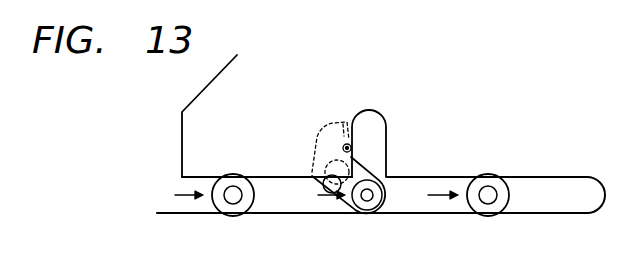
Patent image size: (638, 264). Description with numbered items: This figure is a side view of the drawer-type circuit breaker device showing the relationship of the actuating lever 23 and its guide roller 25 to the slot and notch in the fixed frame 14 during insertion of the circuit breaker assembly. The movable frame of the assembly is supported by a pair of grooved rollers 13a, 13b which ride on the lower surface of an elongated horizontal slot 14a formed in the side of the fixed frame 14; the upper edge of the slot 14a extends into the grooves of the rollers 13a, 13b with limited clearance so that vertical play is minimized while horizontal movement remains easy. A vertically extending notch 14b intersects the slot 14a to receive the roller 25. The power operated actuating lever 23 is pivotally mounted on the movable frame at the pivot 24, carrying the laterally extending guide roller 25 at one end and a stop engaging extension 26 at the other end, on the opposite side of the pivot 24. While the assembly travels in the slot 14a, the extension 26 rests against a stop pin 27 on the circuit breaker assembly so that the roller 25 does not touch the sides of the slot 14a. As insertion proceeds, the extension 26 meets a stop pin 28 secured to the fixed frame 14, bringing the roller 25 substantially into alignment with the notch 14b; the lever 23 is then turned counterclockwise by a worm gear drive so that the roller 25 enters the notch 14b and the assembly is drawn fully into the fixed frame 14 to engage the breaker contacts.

The roller 13a is at (240, 216).
The roller 13b is at (497, 214).
The fixed frame 14 is at (181, 123).
The elongated horizontal slot 14a is at (263, 177).
The vertically extending notch 14b is at (387, 133).
The actuating lever 23 is at (350, 213).
The pivot 24 is at (322, 181).
The guide roller 25 is at (378, 213).
The stop engaging extension 26 is at (338, 123).
The stop pin 27 is at (333, 128).
The stop pin 28 is at (357, 143).